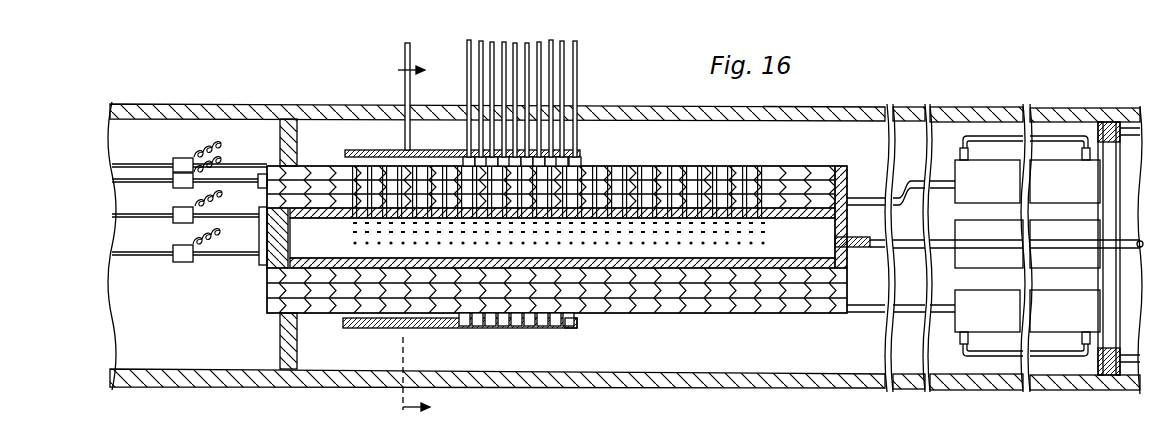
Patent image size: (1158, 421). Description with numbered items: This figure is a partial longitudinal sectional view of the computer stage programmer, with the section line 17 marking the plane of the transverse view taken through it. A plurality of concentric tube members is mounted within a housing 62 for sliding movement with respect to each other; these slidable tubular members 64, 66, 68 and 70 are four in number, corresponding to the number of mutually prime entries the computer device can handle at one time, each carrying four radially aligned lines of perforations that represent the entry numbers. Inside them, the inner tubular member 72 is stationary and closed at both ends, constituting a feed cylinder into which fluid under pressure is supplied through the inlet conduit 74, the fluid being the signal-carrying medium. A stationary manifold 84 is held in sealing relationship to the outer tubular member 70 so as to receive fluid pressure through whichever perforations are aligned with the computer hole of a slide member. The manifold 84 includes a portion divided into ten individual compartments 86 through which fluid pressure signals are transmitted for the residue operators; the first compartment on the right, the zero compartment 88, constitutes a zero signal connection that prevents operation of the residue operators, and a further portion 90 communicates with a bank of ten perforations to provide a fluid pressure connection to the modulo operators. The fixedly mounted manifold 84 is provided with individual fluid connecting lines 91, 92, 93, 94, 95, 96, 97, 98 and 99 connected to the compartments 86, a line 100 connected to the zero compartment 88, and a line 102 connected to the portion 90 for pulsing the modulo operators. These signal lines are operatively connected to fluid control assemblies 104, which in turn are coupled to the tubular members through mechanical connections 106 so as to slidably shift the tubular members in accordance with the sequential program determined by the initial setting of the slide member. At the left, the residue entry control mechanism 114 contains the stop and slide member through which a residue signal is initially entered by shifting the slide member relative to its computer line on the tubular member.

The section line 17- 17 is at (397, 238).
The housing 62 is at (305, 106).
The slidable tubular member 64 is at (847, 188).
The slidable tubular member 66 is at (824, 197).
The slidable tubular member 68 is at (807, 185).
The outer tubular member 70 is at (775, 178).
The inner tubular member 72 is at (799, 219).
The inlet conduit 74 is at (877, 249).
The manifold 84 is at (454, 137).
The individual compartments 86 is at (523, 327).
The zero compartment 88 is at (579, 327).
The manifold portion 90 is at (418, 323).
The fluid connecting line 91 is at (563, 83).
The fluid connecting line 92 is at (552, 72).
The fluid connecting line 93 is at (540, 62).
The fluid connecting line 94 is at (528, 50).
The fluid connecting line 95 is at (516, 44).
The fluid connecting line 96 is at (505, 50).
The fluid connecting line 97 is at (490, 50).
The fluid connecting line 98 is at (466, 46).
The fluid connecting line 99 is at (478, 58).
The zero signal line 100 is at (576, 97).
The modulo pulsing line 102 is at (404, 96).
The fluid control assembly 104 is at (985, 168).
The mechanical connections 106 is at (865, 314).
The residue entry control mechanism 114 is at (179, 270).